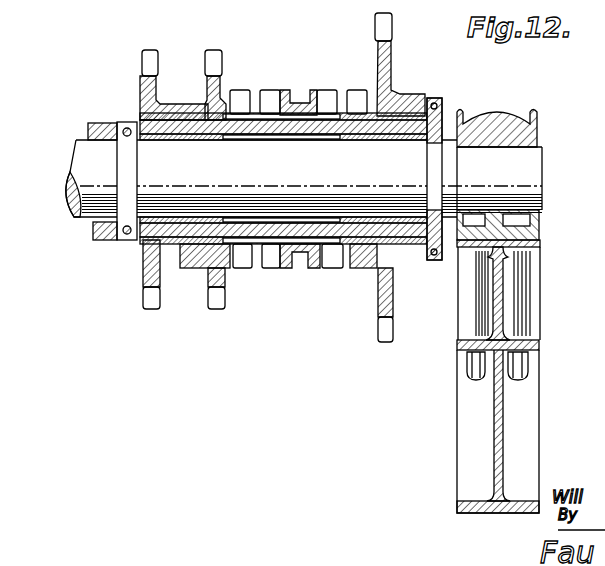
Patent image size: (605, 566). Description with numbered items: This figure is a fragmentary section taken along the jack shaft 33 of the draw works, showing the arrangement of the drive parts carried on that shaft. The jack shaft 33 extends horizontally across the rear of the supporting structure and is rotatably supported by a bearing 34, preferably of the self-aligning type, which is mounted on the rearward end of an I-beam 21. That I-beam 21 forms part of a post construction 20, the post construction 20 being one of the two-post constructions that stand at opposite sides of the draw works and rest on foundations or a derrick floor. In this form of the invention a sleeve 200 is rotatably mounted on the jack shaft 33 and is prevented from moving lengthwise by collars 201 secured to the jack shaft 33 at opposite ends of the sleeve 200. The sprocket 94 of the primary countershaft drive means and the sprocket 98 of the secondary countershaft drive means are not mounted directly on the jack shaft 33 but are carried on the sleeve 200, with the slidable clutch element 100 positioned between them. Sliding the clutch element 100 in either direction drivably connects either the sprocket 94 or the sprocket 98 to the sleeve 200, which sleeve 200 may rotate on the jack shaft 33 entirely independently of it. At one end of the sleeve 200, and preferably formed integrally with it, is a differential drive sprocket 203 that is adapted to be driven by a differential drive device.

The jack shaft 33 is at (80, 158).
The differential drive sprocket 203 is at (143, 103).
The sprocket 98 is at (208, 84).
The slidable clutch element 100 is at (289, 100).
The sprocket 94 is at (391, 68).
The collar 201 is at (442, 118).
The bearing 34 is at (507, 112).
The sleeve 200 is at (196, 141).
The post construction 20 is at (461, 321).
The I-beam 21 is at (462, 424).